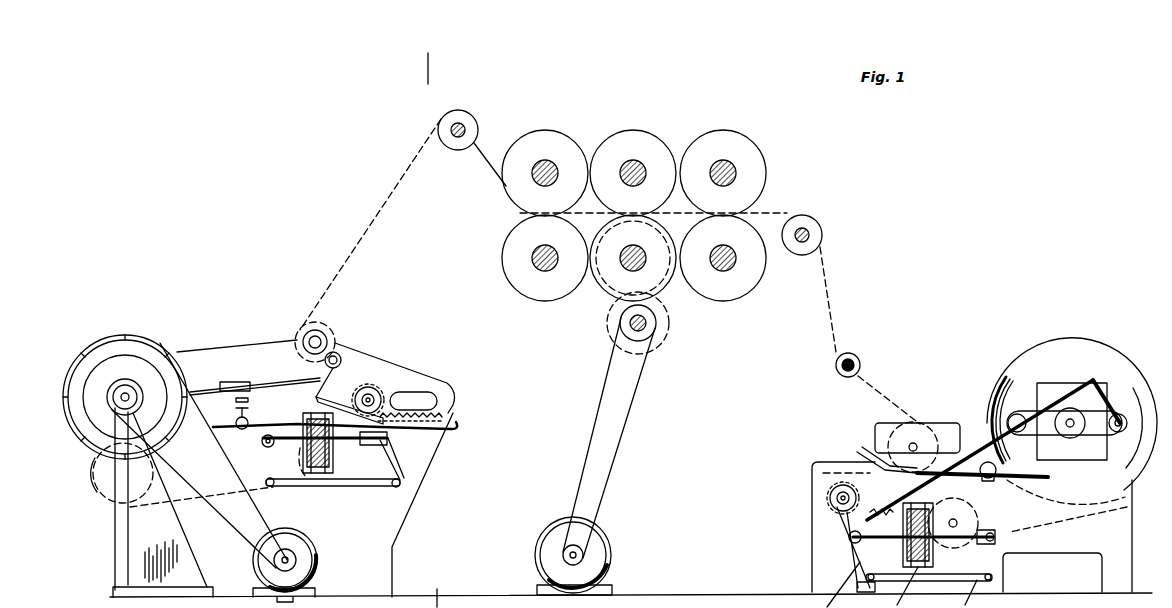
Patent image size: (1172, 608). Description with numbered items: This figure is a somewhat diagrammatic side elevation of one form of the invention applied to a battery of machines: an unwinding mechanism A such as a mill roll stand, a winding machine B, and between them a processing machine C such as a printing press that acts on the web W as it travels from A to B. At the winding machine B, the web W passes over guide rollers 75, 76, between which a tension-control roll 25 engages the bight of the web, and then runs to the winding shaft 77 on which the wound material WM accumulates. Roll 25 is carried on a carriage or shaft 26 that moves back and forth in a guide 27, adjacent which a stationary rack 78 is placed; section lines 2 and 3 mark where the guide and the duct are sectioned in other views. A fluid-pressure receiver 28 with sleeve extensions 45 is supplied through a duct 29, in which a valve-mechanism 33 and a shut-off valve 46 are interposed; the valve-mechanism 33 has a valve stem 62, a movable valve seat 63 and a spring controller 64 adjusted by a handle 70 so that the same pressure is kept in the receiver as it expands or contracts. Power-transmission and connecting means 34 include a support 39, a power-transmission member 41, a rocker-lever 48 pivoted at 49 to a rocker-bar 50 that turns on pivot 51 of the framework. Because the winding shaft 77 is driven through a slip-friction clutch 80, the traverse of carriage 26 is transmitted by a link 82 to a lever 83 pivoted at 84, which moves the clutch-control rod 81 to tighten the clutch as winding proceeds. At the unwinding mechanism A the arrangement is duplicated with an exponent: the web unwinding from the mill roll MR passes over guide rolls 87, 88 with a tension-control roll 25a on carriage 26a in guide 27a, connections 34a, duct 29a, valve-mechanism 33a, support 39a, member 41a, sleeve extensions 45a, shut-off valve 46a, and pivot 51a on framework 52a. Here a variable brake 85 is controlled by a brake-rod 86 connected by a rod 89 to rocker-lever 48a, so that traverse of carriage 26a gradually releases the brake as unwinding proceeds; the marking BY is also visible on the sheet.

The section line 2- 2 is at (457, 400).
The section line 3- 3 is at (428, 70).
The tension-control roll 25 is at (385, 380).
The carriage or shaft 26 is at (416, 390).
The guide 27 is at (436, 395).
The fluid-pressure receiver 28 is at (317, 488).
The duct 29 is at (218, 441).
The valve-mechanism 33 is at (251, 418).
The power-transmission and connecting means 34 is at (401, 448).
The support 39 is at (263, 443).
The power-transmission member 41 is at (414, 453).
The sleeve extensions 45 is at (283, 447).
The shut-off valve 46 is at (305, 424).
The rocker-lever 48 is at (414, 464).
The pivot 49 is at (404, 479).
The rocker-bar 50 is at (353, 488).
The pivot 51 is at (270, 490).
The valve stem 62 is at (338, 573).
The movable valve seat 63 is at (367, 382).
The controller 64 is at (414, 434).
The handle 70 is at (396, 373).
The guide roller 75 is at (320, 330).
The guide roller 76 is at (299, 468).
The winding shaft 77 is at (93, 471).
The stationary rack 78 is at (441, 414).
The slip-friction drive or clutch 80 is at (121, 350).
The clutch-control rod 81 is at (218, 385).
The link 82 is at (350, 383).
The lever 83 is at (325, 362).
The pivot 84 is at (316, 390).
The variable brake 85 is at (1137, 392).
The brake-rod 86 is at (1097, 380).
The guide roll 87 is at (967, 514).
The guide roll 88 is at (918, 425).
The rod 89 is at (1050, 395).
The tension-control roll 25a is at (827, 491).
The carriage 26a is at (827, 513).
The guide 27a is at (862, 453).
The duct 29a is at (1050, 477).
The valve-mechanism 33a is at (1007, 467).
The connections 34a is at (845, 568).
The support 39a is at (997, 537).
The power-transmission member 41a is at (850, 553).
The sleeve extensions 45a is at (942, 547).
The shut-off valve 46a is at (927, 494).
The rocker-lever 48a is at (853, 543).
The pivot 51a is at (996, 577).
The framework 52a is at (1063, 561).
The web W is at (392, 189).
The mill roll MR is at (1068, 343).
The wound material WM is at (107, 493).
The by BY is at (93, 564).
The unwinding mechanism A is at (972, 416).
The winding machine B is at (283, 414).
The processing machine C is at (630, 340).